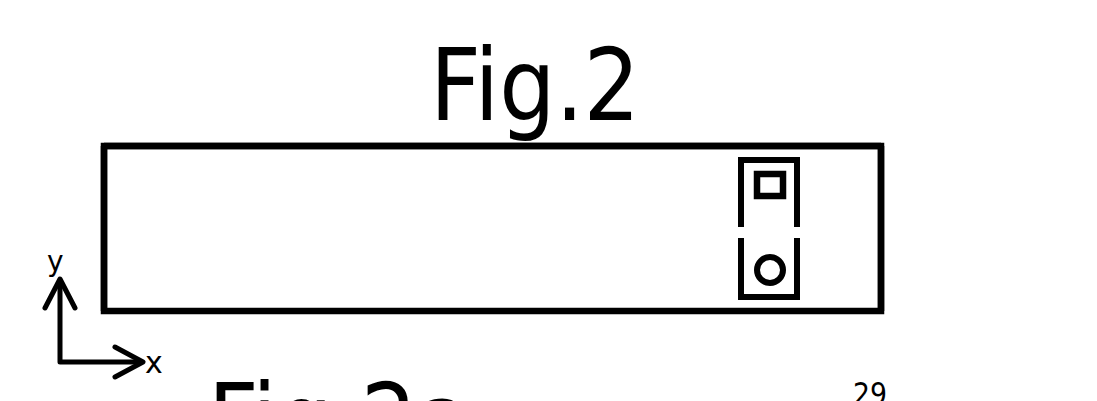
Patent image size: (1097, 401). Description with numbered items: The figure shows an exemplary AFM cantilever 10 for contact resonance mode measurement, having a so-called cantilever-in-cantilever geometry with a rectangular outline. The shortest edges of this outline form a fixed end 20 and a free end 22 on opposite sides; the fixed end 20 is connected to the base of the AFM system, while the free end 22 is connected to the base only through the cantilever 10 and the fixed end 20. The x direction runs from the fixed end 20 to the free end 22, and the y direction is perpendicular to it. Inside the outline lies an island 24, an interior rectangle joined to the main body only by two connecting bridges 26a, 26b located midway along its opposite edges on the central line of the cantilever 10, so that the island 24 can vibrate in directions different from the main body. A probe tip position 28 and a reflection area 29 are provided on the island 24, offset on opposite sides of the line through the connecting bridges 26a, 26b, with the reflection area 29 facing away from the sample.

The cantilever 10 is at (317, 92).
The fixed end 20 is at (102, 198).
The free end 22 is at (884, 176).
The island 24 is at (733, 92).
The connecting bridge 26a is at (742, 231).
The connecting bridge 26b is at (797, 231).
The probe tip position 28 is at (767, 272).
The reflection area 29 is at (768, 192).